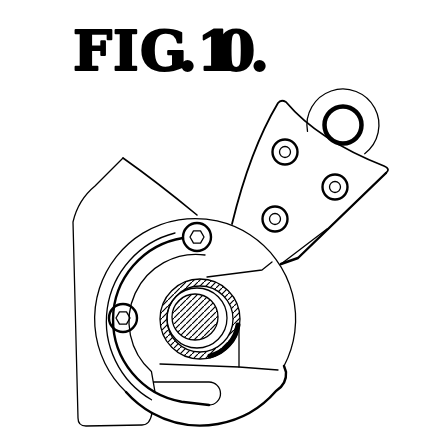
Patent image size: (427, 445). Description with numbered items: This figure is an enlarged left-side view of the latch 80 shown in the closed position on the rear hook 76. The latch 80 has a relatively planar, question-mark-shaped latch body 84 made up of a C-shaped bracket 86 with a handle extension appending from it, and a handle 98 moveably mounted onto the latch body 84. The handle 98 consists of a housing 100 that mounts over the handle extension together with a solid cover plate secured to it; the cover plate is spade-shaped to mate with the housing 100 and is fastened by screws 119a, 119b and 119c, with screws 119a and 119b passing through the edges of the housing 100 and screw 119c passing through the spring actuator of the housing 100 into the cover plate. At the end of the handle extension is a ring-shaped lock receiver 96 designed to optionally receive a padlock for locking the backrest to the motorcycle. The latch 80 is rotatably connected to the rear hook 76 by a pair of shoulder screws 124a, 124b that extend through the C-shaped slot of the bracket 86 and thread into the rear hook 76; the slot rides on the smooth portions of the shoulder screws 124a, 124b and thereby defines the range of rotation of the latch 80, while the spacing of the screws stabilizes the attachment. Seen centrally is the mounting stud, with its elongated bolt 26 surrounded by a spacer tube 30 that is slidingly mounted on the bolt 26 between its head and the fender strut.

The bolt 26 is at (232, 325).
The spacer tube 30 is at (208, 284).
The rear hook 76 is at (290, 320).
The latch 80 is at (328, 227).
The latch body 84 is at (255, 270).
The C-shaped bracket 86 is at (258, 400).
The ring-shaped lock receiver 96 is at (360, 108).
The handle 98 is at (329, 92).
The housing 100 is at (265, 168).
The screw 119a is at (274, 144).
The screw 119b is at (346, 195).
The screw 119c is at (292, 201).
The shoulder screw 124a is at (110, 321).
The shoulder screw 124b is at (203, 222).